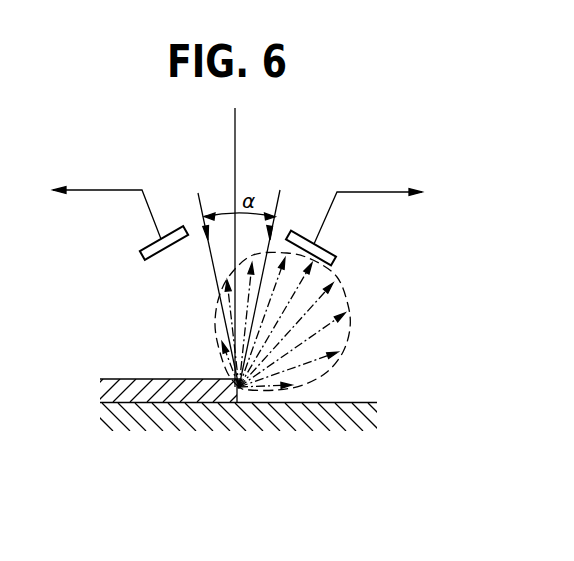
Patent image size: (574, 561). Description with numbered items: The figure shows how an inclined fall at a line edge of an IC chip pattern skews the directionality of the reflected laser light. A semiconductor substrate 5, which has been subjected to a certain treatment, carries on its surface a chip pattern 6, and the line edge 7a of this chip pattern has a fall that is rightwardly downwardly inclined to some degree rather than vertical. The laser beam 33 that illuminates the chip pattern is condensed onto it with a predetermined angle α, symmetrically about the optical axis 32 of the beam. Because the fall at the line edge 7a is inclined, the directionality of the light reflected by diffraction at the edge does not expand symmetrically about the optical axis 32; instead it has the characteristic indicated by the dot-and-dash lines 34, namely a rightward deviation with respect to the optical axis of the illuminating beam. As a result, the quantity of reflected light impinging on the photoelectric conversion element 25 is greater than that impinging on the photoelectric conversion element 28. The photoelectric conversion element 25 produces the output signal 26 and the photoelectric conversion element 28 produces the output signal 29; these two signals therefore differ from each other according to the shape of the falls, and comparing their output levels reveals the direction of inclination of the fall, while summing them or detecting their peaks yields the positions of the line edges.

The semiconductor substrate 5 is at (365, 422).
The chip pattern 6 is at (148, 392).
The line edge 7a is at (238, 398).
The photoelectric conversion element 25 is at (313, 256).
The output signal 26 is at (385, 192).
The photoelectric conversion element 28 is at (147, 246).
The output signal 29 is at (91, 190).
The optical axis 32 is at (236, 122).
The laser beam 33 is at (200, 196).
The dot-and-dash lines 34 is at (336, 277).